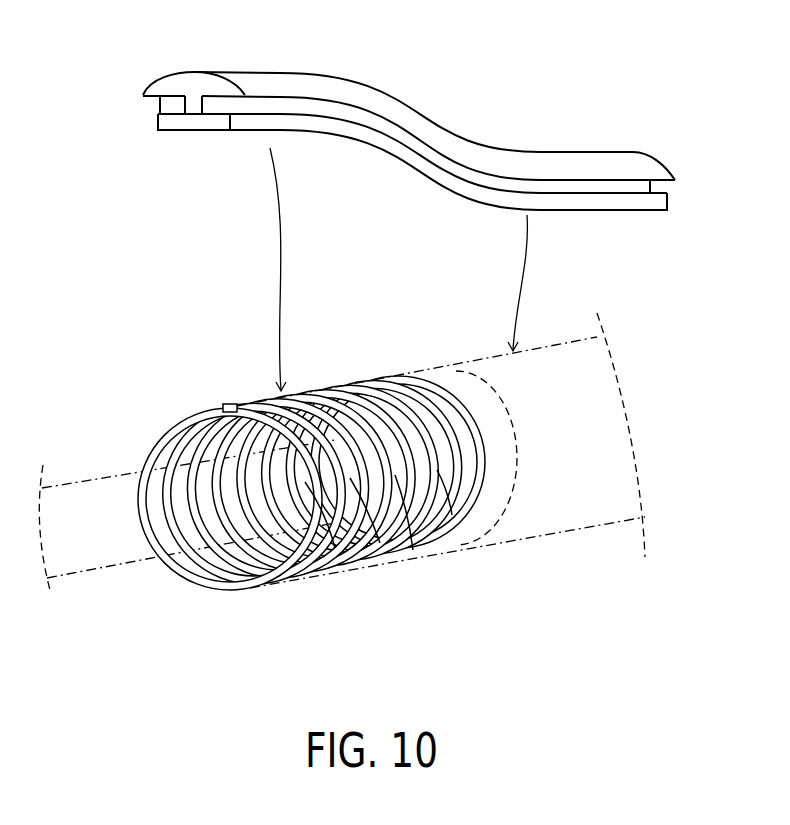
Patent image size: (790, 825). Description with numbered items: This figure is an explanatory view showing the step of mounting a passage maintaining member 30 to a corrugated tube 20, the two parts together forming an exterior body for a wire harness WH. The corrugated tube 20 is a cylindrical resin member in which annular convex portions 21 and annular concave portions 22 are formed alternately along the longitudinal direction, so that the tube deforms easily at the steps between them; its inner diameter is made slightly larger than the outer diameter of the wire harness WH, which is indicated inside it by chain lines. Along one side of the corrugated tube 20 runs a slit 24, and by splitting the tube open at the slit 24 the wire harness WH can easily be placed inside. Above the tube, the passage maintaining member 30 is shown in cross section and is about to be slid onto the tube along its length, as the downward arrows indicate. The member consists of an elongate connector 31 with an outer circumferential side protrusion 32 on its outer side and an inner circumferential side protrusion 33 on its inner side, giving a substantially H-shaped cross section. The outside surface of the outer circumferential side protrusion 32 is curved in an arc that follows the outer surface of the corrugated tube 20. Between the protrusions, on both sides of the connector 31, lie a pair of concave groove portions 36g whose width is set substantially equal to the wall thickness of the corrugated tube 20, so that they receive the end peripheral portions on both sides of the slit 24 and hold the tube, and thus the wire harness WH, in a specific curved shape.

The corrugated tube 20 is at (523, 544).
The annular convex portions 21 is at (372, 558).
The annular concave portions 22 is at (420, 560).
The slit 24 is at (229, 403).
The passage maintaining member 30 is at (374, 86).
The connector 31 is at (563, 190).
The outer circumferential side protrusion 32 is at (670, 170).
The inner circumferential side protrusion 33 is at (650, 205).
The concave groove portions 36g is at (180, 103).
The wire harness WH is at (93, 570).